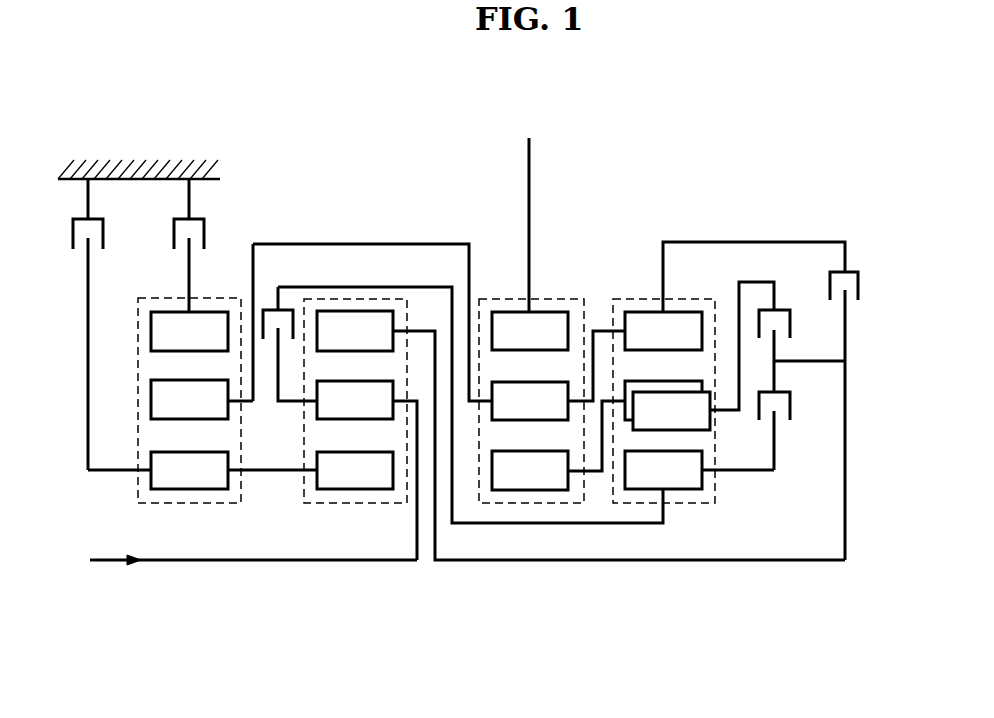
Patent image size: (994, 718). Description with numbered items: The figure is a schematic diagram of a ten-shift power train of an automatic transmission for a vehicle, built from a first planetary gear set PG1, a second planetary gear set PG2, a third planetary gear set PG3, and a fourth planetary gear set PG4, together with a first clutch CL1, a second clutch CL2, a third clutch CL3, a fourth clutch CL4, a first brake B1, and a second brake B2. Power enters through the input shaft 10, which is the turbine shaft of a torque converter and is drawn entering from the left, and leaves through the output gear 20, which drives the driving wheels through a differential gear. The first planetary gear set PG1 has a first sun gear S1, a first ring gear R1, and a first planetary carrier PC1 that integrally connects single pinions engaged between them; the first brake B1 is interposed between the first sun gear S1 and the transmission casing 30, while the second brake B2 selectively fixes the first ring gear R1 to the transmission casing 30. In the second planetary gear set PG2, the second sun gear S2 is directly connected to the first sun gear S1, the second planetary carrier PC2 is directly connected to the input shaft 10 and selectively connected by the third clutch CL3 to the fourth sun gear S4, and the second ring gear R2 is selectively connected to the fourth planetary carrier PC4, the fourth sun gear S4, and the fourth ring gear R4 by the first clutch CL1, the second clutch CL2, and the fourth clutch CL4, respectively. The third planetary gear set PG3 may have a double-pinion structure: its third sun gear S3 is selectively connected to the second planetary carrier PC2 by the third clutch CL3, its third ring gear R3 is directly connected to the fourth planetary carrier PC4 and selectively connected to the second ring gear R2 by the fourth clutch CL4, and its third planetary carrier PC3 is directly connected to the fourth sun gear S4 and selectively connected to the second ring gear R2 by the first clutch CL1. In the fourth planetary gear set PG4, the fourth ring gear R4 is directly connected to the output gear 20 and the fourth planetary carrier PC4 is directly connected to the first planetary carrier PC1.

The input shaft 10 is at (112, 565).
The output gear 20 is at (527, 165).
The transmission casing 30 is at (137, 170).
The first brake B1 is at (98, 324).
The second brake B2 is at (205, 245).
The first clutch CL1 is at (802, 351).
The second clutch CL2 is at (796, 431).
The third clutch CL3 is at (463, 393).
The fourth clutch CL4 is at (866, 416).
The first planetary gear set PG1 is at (185, 504).
The second planetary gear set PG2 is at (353, 504).
The third planetary gear set PG3 is at (640, 504).
The fourth planetary gear set PG4 is at (527, 504).
The first sun gear S1 is at (151, 460).
The second sun gear S2 is at (378, 491).
The third sun gear S3 is at (678, 491).
The fourth sun gear S4 is at (555, 491).
The first planetary carrier PC1 is at (250, 405).
The second planetary carrier PC2 is at (287, 403).
The third planetary carrier PC3 is at (728, 411).
The fourth planetary carrier PC4 is at (468, 402).
The first ring gear R1 is at (151, 331).
The second ring gear R2 is at (355, 311).
The third ring gear R3 is at (683, 310).
The fourth ring gear R4 is at (557, 312).